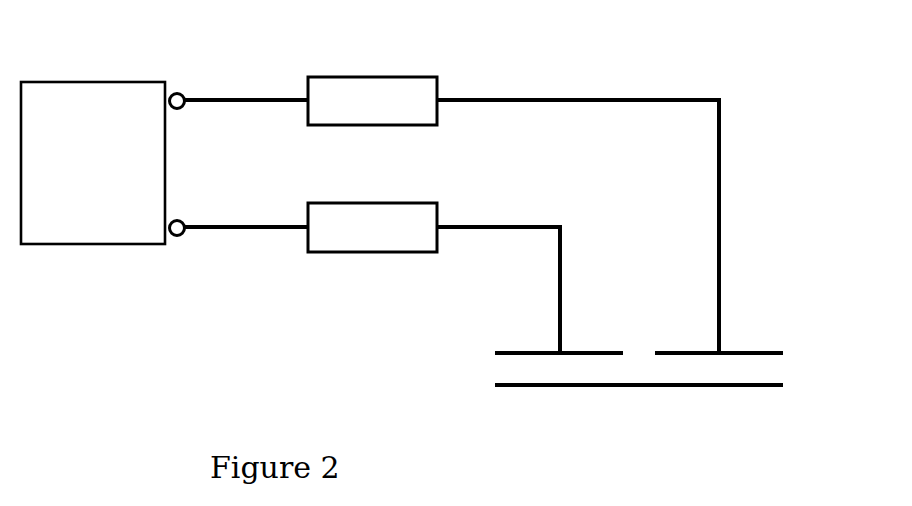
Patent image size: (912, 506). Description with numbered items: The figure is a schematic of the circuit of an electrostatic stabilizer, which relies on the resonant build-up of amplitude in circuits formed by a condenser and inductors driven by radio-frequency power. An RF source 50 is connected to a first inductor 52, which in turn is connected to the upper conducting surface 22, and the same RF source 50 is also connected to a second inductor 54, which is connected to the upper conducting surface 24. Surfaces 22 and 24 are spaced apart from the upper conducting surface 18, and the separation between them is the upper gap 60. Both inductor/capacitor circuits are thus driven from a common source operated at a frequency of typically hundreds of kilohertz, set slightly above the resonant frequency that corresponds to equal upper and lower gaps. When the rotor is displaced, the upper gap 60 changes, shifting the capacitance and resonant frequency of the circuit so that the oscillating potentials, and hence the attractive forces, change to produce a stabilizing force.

The RF source 50 is at (103, 163).
The second inductor 54 is at (346, 76).
The first inductor 52 is at (357, 253).
The upper conducting surface 22 is at (520, 350).
The upper conducting surface 24 is at (738, 350).
The upper conducting surface 18 is at (640, 383).
The upper gap 60 is at (792, 352).